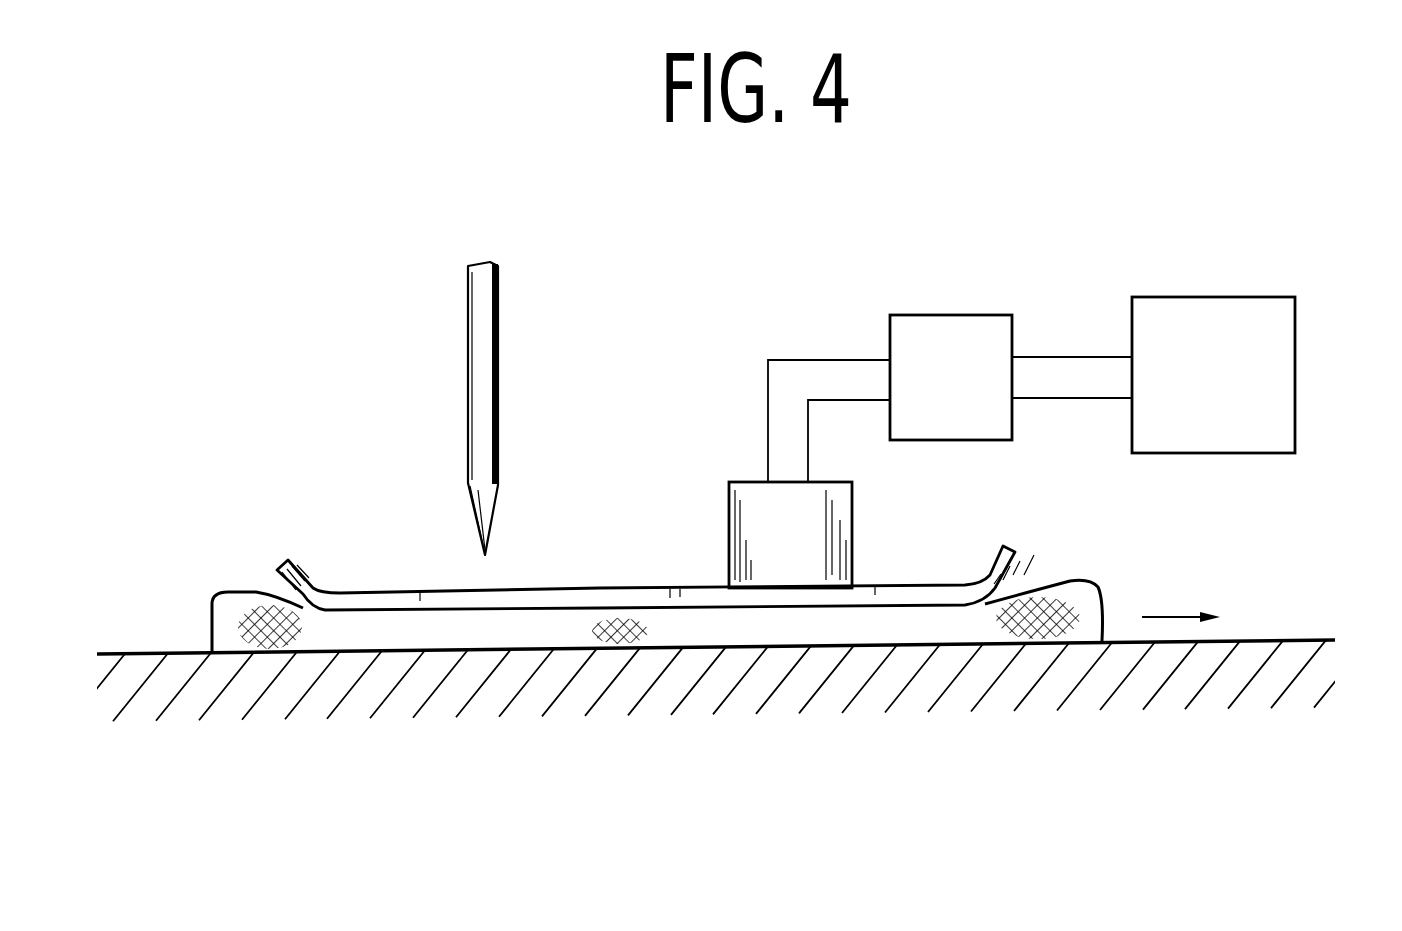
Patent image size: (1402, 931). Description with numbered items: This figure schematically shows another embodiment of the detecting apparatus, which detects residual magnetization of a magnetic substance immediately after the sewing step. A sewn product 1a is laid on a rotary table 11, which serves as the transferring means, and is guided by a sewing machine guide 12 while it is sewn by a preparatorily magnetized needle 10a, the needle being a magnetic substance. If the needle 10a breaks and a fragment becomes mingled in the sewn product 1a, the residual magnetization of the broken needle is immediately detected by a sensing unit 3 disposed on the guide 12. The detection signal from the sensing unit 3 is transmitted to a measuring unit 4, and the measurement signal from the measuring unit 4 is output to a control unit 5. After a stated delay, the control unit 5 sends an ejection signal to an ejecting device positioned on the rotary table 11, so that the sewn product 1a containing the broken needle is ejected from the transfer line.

The sewn product 1a is at (712, 633).
The sensing unit 3 is at (852, 512).
The measuring unit 4 is at (948, 315).
The control unit 5 is at (1207, 297).
The needle 10a is at (498, 292).
The rotary table 11 is at (1288, 640).
The sewing machine guide 12 is at (583, 588).